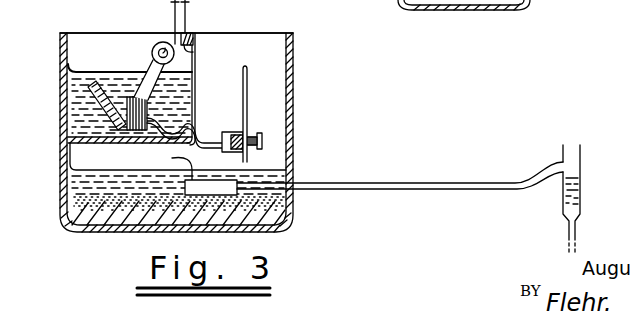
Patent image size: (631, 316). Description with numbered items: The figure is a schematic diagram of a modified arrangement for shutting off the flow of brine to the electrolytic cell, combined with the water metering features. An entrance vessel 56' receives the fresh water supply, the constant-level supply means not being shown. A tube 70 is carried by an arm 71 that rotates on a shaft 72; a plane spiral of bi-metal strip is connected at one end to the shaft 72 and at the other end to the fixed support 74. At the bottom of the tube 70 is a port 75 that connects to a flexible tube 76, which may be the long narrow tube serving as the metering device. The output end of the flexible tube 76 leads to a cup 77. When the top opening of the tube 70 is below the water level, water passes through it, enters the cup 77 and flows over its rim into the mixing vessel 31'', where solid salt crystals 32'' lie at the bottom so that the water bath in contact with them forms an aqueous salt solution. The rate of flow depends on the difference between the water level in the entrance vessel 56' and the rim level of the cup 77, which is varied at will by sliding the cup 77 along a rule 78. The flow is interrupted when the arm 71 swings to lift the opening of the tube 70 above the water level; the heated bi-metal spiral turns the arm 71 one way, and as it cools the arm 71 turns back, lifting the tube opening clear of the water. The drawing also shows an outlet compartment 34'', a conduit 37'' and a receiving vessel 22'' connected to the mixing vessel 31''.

The mixing vessel 31'' is at (153, 132).
The salt crystals 32'' is at (178, 231).
The outlet compartment 34'' is at (178, 162).
The conduit 37'' is at (374, 172).
The receiving vessel 22'' is at (596, 198).
The entrance vessel 56' is at (212, 89).
The tube 70 is at (103, 130).
The arm 71 is at (138, 78).
The shaft 72 is at (150, 58).
The fixed support 74 is at (198, 50).
The port 75 is at (124, 124).
The flexible tube 76 is at (198, 136).
The cup 77 is at (234, 153).
The rule 78 is at (248, 86).